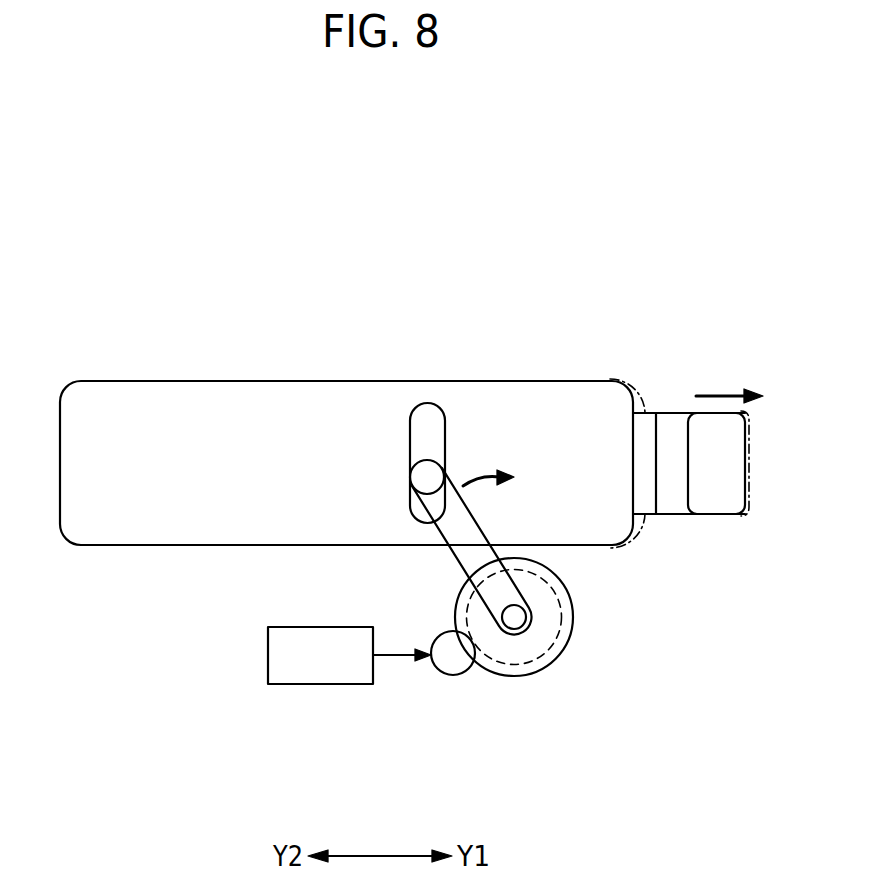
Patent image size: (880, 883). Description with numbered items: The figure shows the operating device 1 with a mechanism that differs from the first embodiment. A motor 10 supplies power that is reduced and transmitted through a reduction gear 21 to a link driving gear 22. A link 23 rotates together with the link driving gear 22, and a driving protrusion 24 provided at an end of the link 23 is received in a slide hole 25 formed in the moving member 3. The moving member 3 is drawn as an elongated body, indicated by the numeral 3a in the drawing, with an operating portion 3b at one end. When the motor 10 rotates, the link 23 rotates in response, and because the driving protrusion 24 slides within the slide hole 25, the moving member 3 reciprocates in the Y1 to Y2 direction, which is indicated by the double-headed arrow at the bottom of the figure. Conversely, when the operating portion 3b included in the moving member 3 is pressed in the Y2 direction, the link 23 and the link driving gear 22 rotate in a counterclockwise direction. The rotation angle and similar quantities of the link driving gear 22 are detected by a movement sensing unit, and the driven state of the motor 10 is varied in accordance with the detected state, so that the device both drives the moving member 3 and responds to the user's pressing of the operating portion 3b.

The operating device 1 is at (159, 223).
The moving member 3 is at (610, 326).
The main body portion 3a is at (301, 381).
The operating portion 3b is at (709, 504).
The motor 10 is at (290, 684).
The reduction gear 21 is at (453, 675).
The link driving gear 22 is at (557, 630).
The link 23 is at (435, 534).
The driving protrusion 24 is at (418, 475).
The slide hole 25 is at (425, 403).